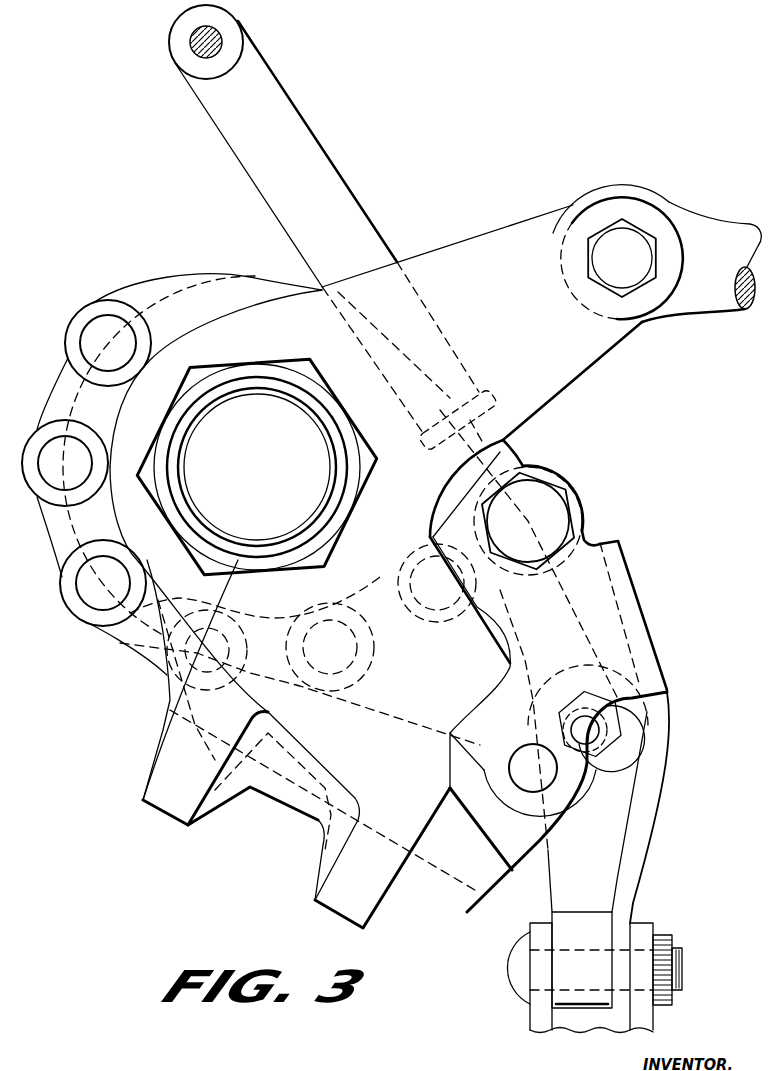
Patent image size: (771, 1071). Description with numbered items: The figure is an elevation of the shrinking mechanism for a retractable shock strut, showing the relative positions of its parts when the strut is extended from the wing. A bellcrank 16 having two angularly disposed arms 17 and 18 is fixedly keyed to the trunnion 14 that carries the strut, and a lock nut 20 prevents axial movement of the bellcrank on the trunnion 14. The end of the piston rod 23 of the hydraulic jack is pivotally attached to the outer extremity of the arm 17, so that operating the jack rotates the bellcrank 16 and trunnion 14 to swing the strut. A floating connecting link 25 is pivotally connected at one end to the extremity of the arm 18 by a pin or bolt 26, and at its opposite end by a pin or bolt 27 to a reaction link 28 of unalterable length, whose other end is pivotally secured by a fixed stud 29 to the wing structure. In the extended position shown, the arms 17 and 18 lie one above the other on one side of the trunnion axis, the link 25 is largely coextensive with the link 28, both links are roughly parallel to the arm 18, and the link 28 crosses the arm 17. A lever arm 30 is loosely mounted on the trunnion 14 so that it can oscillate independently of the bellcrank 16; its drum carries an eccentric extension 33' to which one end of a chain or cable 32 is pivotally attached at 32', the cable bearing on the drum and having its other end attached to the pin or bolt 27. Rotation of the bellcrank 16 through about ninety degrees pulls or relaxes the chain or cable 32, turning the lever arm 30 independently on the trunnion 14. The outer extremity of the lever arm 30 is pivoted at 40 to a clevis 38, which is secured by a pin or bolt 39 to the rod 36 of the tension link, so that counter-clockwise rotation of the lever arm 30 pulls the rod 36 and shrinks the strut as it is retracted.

The trunnion 14 is at (333, 503).
The bellcrank 16 is at (118, 413).
The arm 17 is at (525, 235).
The arm 18 is at (412, 823).
The lock nut 20 is at (358, 455).
The piston rod 23 is at (702, 232).
The floating connecting link 25 is at (630, 597).
The pin or bolt 26 is at (523, 777).
The pin or bolt 27 is at (560, 520).
The reaction link 28 is at (302, 135).
The stud 29 is at (220, 35).
The lever arm 30 is at (563, 650).
The chain or cable 32 is at (103, 607).
The pivotal attachment 32' is at (89, 337).
The eccentric extension 33' is at (159, 504).
The rod 36 is at (532, 1022).
The clevis 38 is at (630, 920).
The pin or bolt 39 is at (682, 963).
The pivot 40 is at (603, 732).